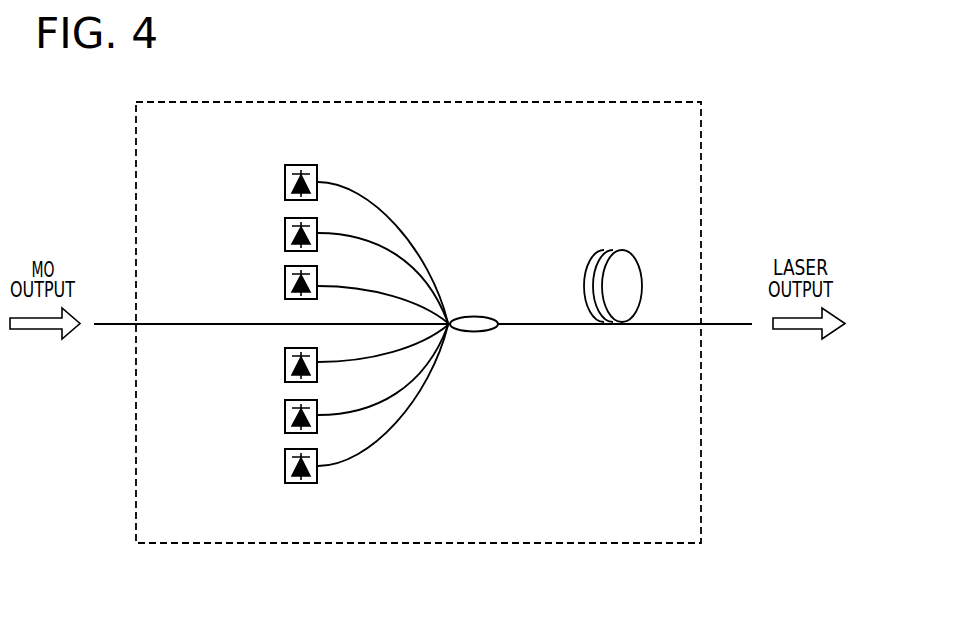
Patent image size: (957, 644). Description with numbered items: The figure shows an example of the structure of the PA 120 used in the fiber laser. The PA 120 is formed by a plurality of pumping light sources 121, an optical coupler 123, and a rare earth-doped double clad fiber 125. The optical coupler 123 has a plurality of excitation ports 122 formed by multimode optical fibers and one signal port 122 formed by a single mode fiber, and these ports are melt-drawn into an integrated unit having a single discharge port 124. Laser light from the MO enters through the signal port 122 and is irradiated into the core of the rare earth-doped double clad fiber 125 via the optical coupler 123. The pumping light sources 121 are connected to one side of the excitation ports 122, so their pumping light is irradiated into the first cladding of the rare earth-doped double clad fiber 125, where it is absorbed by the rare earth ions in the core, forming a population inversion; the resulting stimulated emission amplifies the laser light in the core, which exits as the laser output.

The PA 120 is at (704, 205).
The pumping light source 121 is at (285, 285).
The excitation port 122 is at (371, 287).
The optical coupler 123 is at (477, 315).
The discharge port 124 is at (556, 328).
The rare earth-doped double clad fiber 125 is at (611, 250).